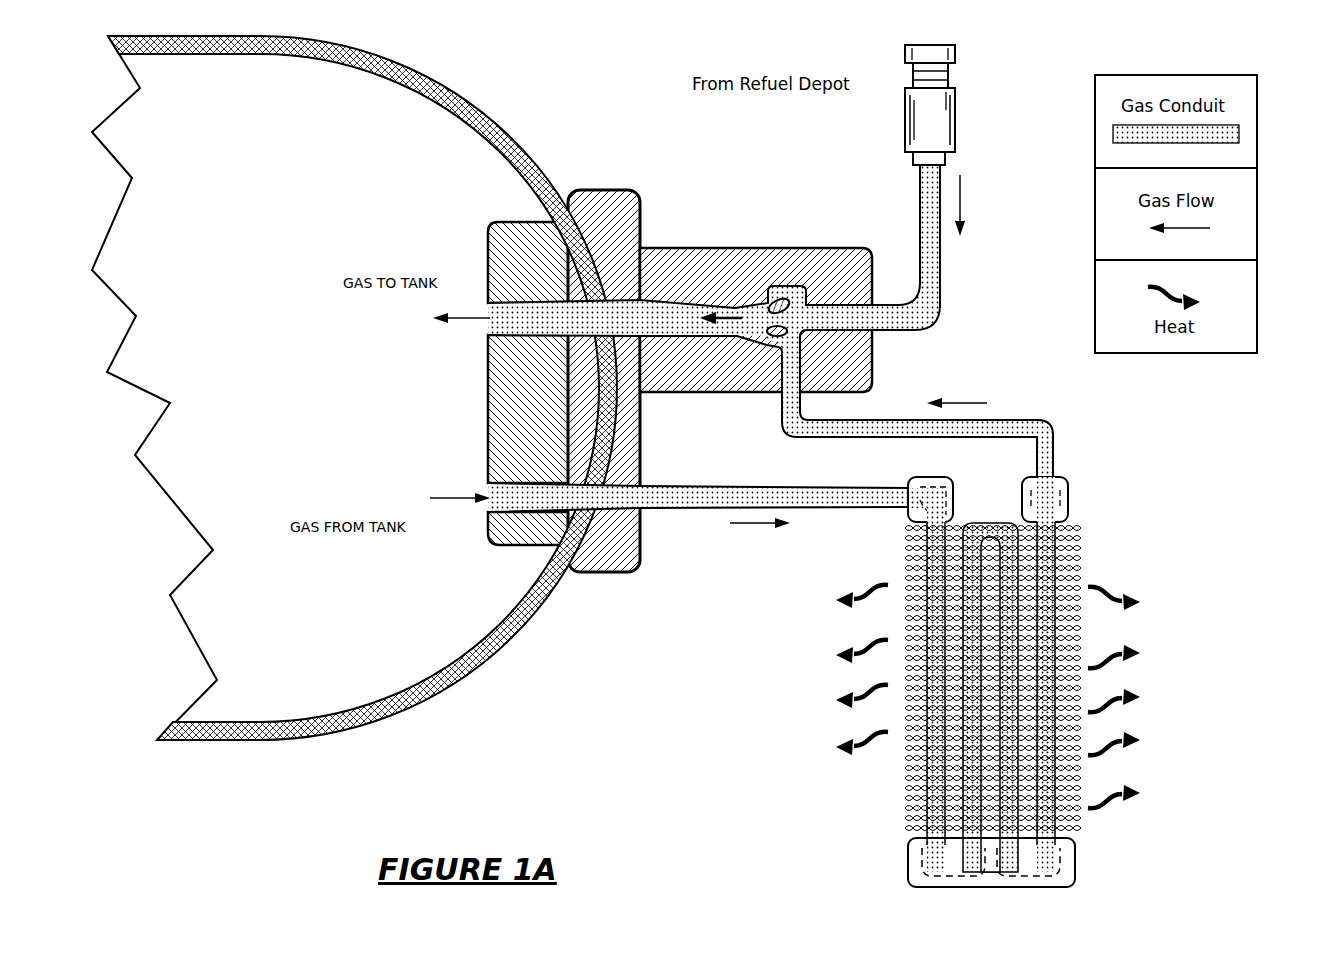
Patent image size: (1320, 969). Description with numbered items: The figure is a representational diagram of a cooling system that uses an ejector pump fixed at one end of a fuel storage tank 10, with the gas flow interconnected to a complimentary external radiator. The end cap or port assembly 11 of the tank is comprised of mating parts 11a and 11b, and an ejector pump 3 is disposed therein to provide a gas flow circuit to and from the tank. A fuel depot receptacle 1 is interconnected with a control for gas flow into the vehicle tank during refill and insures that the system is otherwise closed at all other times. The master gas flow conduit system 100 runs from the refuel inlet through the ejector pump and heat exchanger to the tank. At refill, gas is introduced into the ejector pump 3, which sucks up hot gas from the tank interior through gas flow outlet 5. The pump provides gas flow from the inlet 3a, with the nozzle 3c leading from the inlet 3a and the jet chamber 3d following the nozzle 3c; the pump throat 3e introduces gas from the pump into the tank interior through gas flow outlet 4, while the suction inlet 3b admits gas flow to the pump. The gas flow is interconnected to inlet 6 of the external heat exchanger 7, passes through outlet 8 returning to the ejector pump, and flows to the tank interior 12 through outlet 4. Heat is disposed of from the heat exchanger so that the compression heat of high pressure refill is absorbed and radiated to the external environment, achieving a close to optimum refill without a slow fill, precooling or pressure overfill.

The fuel depot receptacle 1 is at (953, 120).
The ejector pump 3 is at (832, 248).
The inlet 3a is at (863, 320).
The suction inlet 3b is at (782, 397).
The nozzle 3c is at (773, 298).
The jet chamber 3d is at (731, 306).
The pump throat 3e is at (665, 318).
The gas flow outlet 4 is at (477, 318).
The gas flow outlet 5 is at (460, 490).
The inlet 6 is at (920, 507).
The heat exchanger 7 is at (905, 812).
The outlet 8 is at (1047, 480).
The fuel storage tank 10 is at (430, 70).
The port assembly 11 is at (593, 190).
The mating part 11a is at (618, 190).
The mating part 11b is at (490, 537).
The tank interior 12 is at (154, 388).
The master gas flow conduit system 100 is at (945, 314).